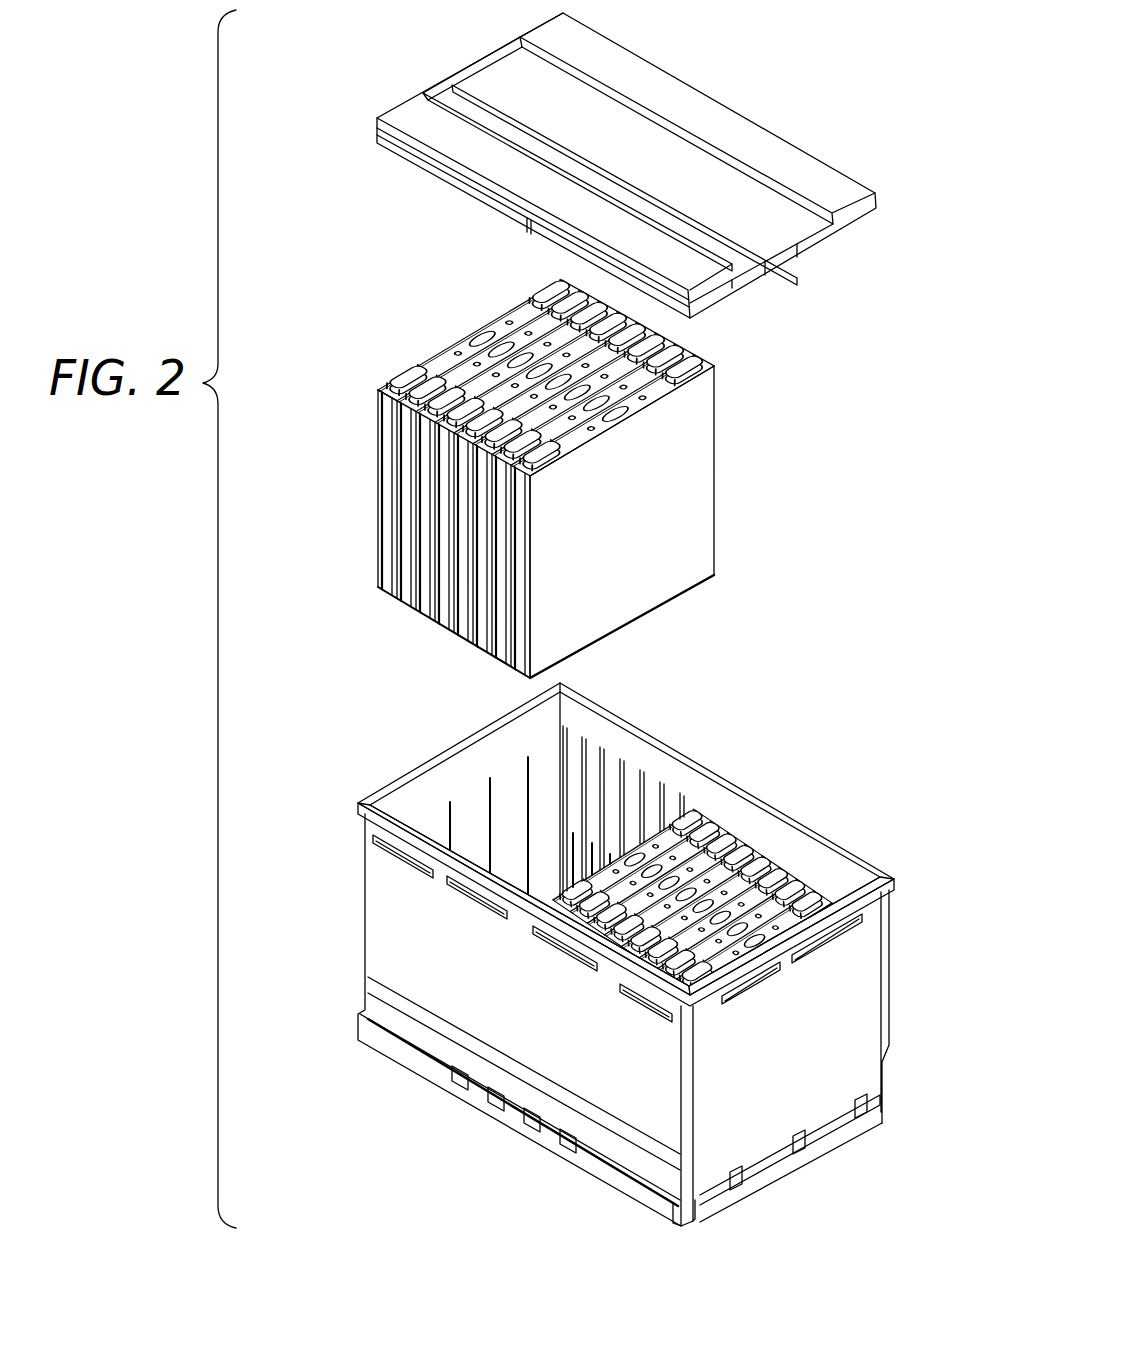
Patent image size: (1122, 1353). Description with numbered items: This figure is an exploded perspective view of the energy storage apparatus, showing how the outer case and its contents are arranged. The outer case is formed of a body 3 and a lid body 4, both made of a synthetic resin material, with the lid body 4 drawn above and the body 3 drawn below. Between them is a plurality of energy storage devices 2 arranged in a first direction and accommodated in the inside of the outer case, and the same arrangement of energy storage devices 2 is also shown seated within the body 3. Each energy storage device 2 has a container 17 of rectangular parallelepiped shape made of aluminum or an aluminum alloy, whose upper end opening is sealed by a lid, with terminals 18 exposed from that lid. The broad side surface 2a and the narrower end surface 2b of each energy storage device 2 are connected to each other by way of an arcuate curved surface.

The energy storage device 2 is at (554, 636).
The side surface 2a is at (648, 522).
The end surface 2b is at (384, 518).
The body 3 is at (403, 780).
The lid body 4 is at (376, 128).
The container 17 is at (690, 502).
The terminals 18 is at (395, 374).